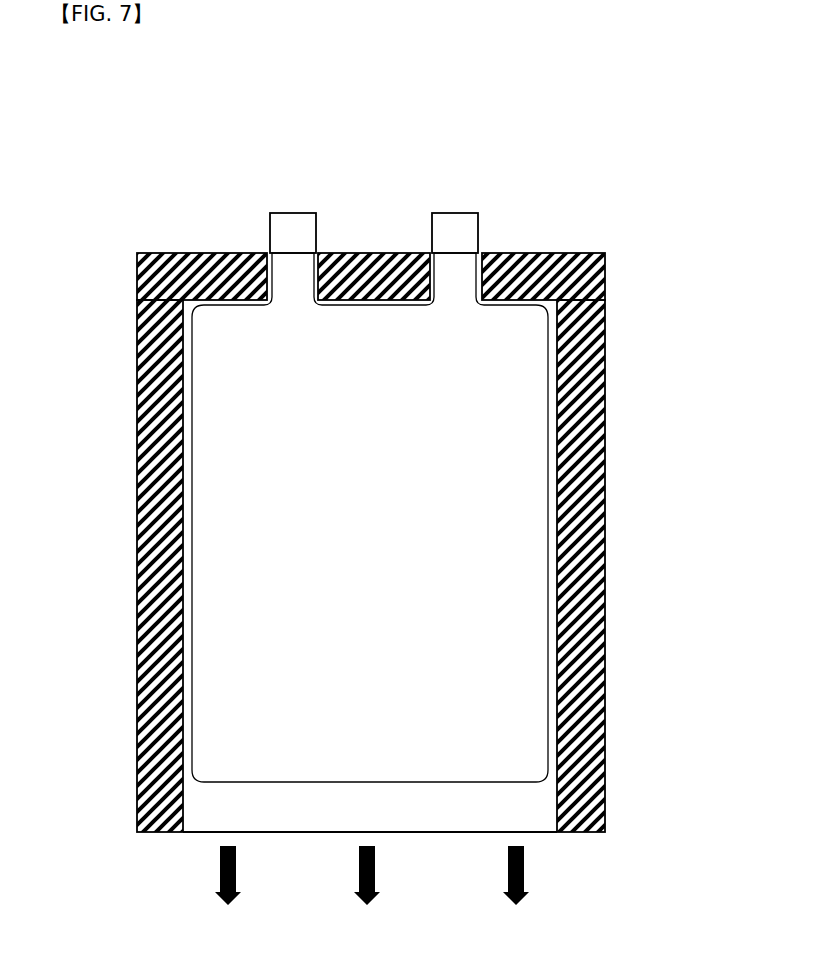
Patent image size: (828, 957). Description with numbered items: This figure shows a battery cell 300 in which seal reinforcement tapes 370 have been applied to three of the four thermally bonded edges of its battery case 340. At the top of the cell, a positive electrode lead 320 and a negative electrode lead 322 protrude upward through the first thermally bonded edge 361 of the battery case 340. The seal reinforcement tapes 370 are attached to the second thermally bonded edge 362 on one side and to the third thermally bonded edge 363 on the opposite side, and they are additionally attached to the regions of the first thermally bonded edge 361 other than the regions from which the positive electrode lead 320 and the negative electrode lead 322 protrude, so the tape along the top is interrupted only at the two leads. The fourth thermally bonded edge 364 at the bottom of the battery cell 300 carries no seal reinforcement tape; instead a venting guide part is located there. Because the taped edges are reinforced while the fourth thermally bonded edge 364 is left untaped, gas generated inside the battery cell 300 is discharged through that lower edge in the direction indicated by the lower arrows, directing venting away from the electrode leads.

The battery cell 300 is at (110, 123).
The positive electrode lead 320 is at (283, 213).
The negative electrode lead 322 is at (467, 213).
The battery case 340 is at (374, 498).
The first thermally bonded edge 361 is at (212, 302).
The second thermally bonded edge 362 is at (188, 593).
The third thermally bonded edge 363 is at (553, 595).
The fourth thermally bonded edge 364 is at (306, 820).
The seal reinforcement tapes 370 is at (236, 272).